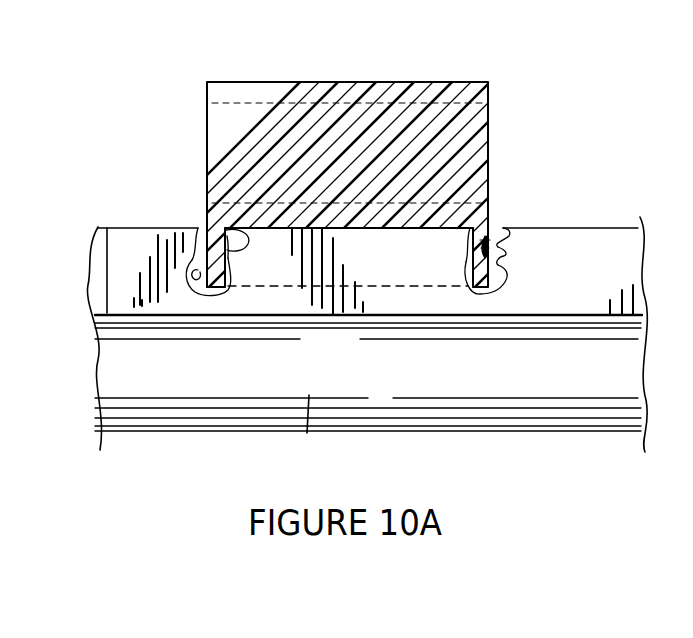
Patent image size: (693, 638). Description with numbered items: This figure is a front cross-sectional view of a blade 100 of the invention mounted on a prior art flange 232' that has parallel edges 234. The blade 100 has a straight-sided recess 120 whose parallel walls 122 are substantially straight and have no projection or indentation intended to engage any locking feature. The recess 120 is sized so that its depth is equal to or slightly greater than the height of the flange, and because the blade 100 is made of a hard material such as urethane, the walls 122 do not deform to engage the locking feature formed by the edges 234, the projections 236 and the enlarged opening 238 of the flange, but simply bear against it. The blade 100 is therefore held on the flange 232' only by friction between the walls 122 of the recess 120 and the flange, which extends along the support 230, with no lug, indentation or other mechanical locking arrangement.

The blade 100 is at (433, 82).
The recess 120 is at (415, 290).
The walls 122 is at (245, 236).
The support 230 is at (502, 377).
The flange 232' is at (508, 228).
The edges 234 is at (207, 237).
The projections 236 is at (503, 253).
The enlarged opening 238 is at (200, 292).